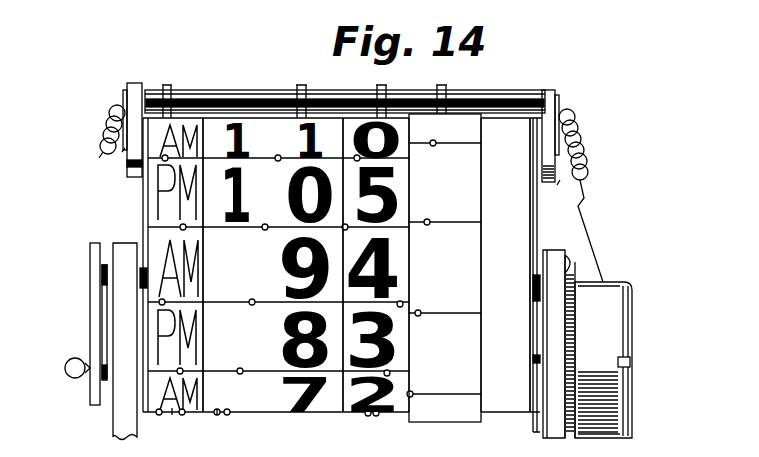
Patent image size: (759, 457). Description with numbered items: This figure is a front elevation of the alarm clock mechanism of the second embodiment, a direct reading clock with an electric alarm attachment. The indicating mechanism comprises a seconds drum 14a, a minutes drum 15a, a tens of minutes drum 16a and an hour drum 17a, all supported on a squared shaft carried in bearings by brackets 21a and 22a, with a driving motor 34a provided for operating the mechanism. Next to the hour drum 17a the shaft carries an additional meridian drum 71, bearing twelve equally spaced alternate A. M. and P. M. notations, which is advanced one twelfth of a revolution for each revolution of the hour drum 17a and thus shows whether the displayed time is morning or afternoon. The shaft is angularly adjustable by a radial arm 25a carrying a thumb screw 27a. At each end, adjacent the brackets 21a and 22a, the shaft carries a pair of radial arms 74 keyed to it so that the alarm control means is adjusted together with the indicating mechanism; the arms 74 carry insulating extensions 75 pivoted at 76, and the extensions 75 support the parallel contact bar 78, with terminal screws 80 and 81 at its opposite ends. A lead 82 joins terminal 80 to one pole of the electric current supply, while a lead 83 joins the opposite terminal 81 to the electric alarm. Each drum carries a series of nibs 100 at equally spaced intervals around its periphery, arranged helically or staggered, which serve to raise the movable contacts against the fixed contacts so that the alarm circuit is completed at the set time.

The seconds drum 14a is at (509, 420).
The minutes drum 15a is at (414, 418).
The tens of minutes drum 16a is at (346, 412).
The hour drum 17a is at (266, 402).
The bracket 21a is at (540, 428).
The bracket 22a is at (114, 432).
The radial arm 25a is at (97, 311).
The thumb screw 27a is at (65, 368).
The driving motor 34a is at (610, 338).
The meridian drum 71 is at (172, 416).
The radial arms 74 is at (146, 216).
The extensions 75 is at (137, 106).
The pivot 76 is at (125, 150).
The contact bar 78 is at (244, 99).
The terminal screw 80 is at (558, 93).
The terminal screw 81 is at (128, 86).
The lead 82 is at (578, 167).
The lead 83 is at (110, 122).
The nibs 100 is at (221, 414).